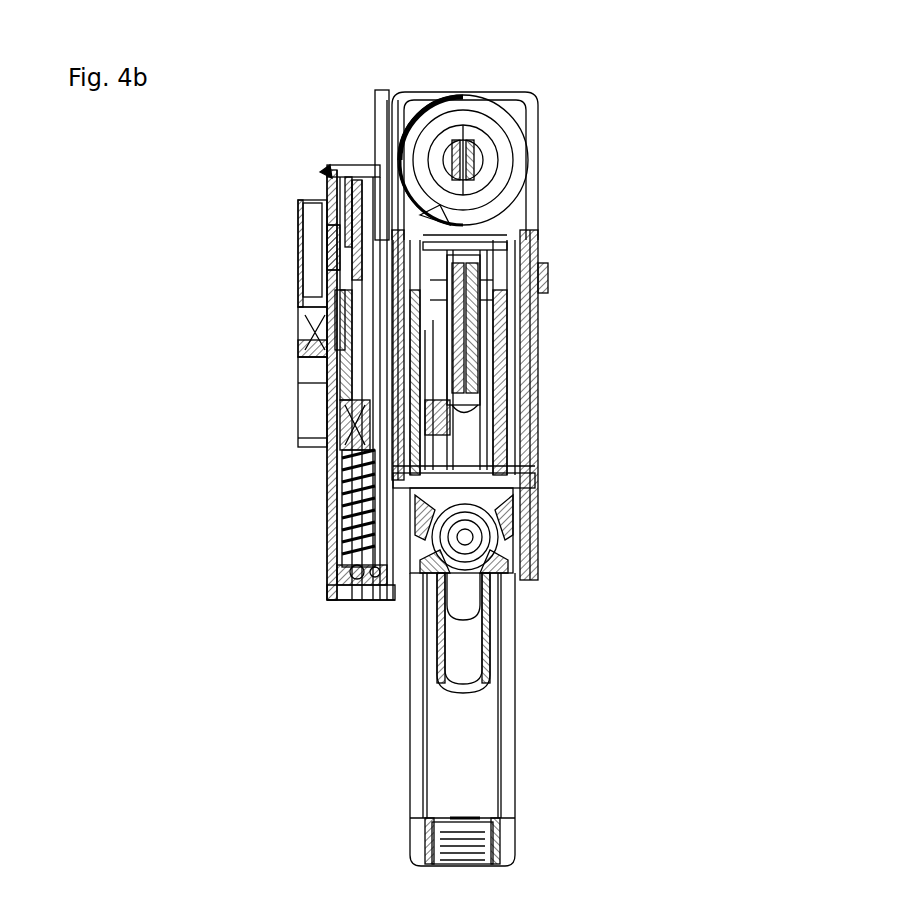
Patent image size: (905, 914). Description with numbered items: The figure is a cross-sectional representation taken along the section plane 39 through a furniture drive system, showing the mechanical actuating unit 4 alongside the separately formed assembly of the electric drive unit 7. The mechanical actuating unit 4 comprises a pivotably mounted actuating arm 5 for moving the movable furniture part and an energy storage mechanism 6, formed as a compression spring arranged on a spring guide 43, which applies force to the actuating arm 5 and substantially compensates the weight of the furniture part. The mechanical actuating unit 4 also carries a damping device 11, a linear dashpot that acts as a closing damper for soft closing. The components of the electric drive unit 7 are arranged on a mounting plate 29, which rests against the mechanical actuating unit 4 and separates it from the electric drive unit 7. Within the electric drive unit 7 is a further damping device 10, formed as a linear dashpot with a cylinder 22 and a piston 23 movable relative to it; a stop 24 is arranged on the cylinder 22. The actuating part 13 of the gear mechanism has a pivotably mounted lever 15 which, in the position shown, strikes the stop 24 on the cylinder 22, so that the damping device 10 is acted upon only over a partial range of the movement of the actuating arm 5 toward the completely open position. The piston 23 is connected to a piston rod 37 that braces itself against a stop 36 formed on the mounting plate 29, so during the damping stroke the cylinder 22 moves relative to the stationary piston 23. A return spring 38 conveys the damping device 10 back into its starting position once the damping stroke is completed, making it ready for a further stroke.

The mechanical actuating unit 4 is at (557, 72).
The actuating arm 5 is at (466, 750).
The energy storage mechanism 6 is at (510, 168).
The electric drive unit 7 is at (390, 72).
The damping device 10 is at (330, 512).
The damping device 11 is at (507, 543).
The actuating part 13 is at (297, 411).
The lever 15 is at (305, 362).
The cylinder 22 is at (327, 557).
The piston 23 is at (340, 392).
The stop 24 is at (300, 300).
The mounting plate 29 is at (377, 117).
The stop 36 is at (328, 170).
The piston rod 37 is at (350, 192).
The return spring 38 is at (327, 477).
The section plane 39 is at (658, 5).
The spring guide 43 is at (470, 175).